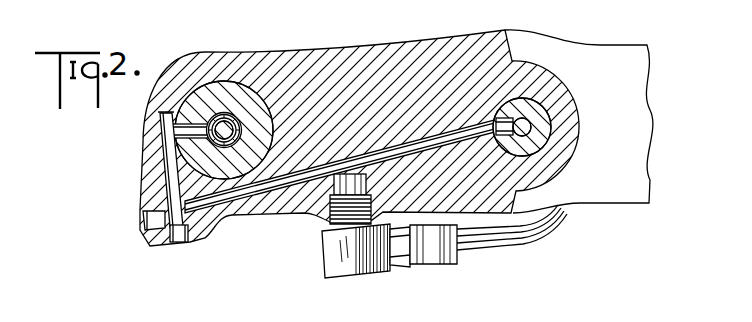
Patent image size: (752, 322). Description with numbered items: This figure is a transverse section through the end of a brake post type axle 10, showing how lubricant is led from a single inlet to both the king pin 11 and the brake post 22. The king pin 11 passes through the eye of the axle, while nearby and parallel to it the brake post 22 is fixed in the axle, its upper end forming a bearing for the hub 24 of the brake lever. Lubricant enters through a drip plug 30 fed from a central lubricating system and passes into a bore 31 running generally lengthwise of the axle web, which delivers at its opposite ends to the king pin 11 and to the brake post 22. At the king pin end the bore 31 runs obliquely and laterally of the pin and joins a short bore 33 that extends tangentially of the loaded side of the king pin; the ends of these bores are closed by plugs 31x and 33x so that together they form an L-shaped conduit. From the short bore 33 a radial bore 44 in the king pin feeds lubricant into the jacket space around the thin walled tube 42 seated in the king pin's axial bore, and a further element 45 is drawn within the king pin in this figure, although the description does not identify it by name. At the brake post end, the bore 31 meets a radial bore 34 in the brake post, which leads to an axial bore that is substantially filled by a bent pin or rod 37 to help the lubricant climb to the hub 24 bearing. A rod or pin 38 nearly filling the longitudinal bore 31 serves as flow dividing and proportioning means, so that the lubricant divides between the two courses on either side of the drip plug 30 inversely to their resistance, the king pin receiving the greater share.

The axle 10 is at (348, 54).
The king pin 11 is at (255, 98).
The brake post 22 is at (536, 108).
The hub 24 is at (570, 155).
The drip plug 30 is at (355, 277).
The bore 31 is at (366, 153).
The plug 31x is at (150, 216).
The short bore 33 is at (166, 162).
The plug 33x is at (180, 242).
The radial bore 34 is at (508, 116).
The pin or rod 37 is at (532, 127).
The rod or pin 38 is at (287, 186).
The thin walled tube 42 is at (237, 117).
The radial bore 44 is at (189, 134).
The pin 45 is at (223, 128).